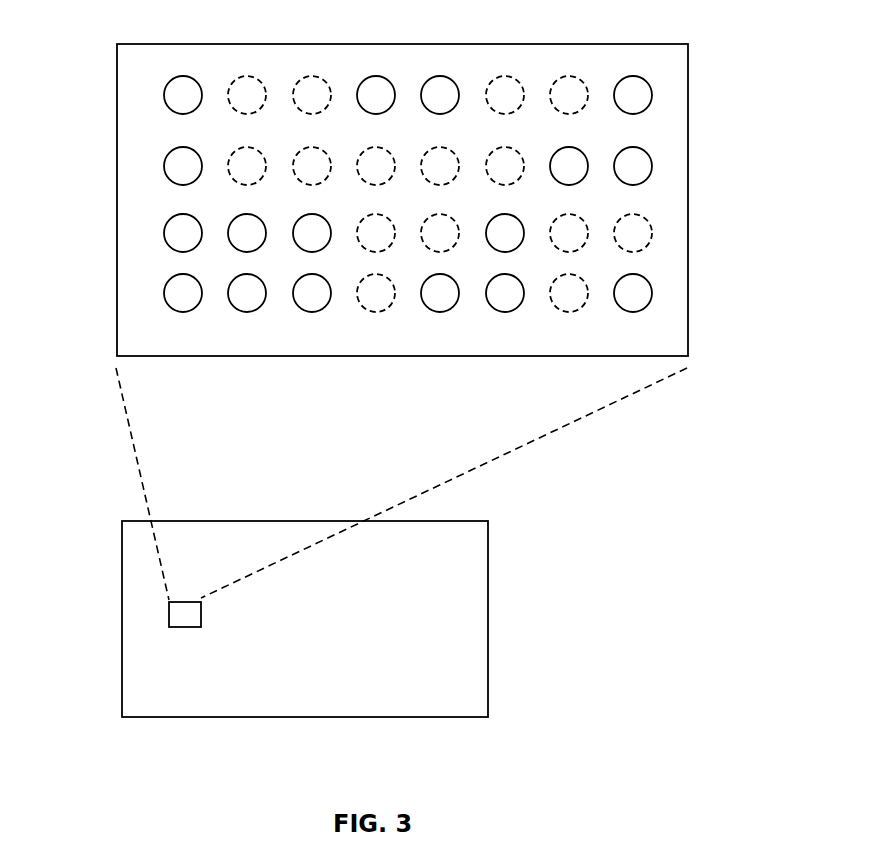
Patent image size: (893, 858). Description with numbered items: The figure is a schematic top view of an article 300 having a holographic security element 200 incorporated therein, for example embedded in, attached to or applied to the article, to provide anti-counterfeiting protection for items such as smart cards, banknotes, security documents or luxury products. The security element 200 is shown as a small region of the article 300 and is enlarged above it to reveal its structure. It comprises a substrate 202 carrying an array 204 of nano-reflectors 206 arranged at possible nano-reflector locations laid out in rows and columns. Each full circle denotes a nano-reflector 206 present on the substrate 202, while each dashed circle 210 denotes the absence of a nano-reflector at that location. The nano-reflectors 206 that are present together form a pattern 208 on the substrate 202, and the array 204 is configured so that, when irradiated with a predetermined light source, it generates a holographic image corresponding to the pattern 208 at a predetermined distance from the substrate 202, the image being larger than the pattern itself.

The holographic security element 200 is at (168, 620).
The substrate 202 is at (688, 130).
The array of nano-reflectors 204 is at (134, 233).
The nano-reflector 206 is at (191, 78).
The pattern 208 is at (273, 331).
The absent nano-reflector location 210 is at (652, 233).
The article 300 is at (488, 628).